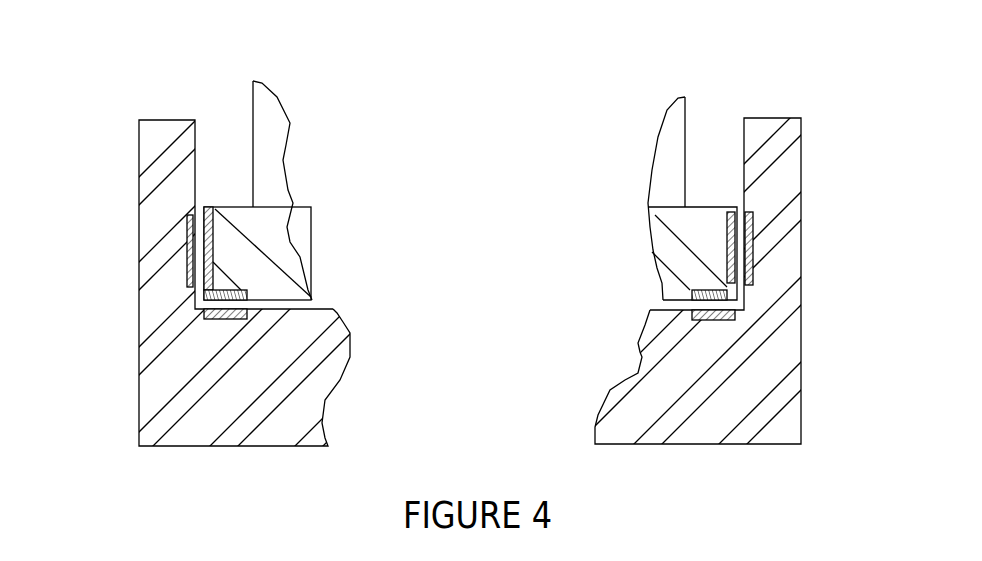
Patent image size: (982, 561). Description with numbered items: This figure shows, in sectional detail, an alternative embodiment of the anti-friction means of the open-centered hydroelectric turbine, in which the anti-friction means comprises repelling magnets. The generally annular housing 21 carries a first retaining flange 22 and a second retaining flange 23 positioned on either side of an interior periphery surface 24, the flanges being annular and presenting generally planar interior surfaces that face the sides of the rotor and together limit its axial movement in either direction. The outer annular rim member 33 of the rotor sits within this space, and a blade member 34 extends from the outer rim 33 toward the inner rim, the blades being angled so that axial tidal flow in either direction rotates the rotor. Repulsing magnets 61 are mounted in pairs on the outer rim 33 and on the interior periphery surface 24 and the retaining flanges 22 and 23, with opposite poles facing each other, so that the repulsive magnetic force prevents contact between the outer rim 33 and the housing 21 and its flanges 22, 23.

The housing 21 is at (213, 446).
The first retaining flange 22 is at (138, 165).
The second retaining flange 23 is at (802, 155).
The interior periphery surface 24 is at (298, 307).
The outer annular rim member 33 is at (227, 207).
The blade member 34 is at (268, 108).
The repulsing magnets 61 is at (206, 268).